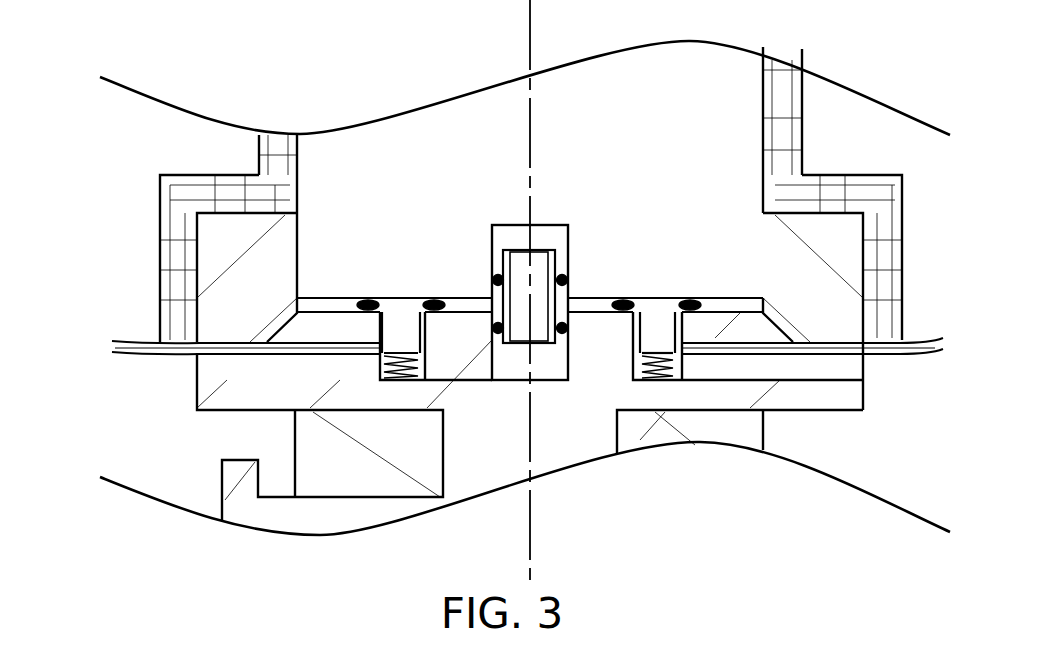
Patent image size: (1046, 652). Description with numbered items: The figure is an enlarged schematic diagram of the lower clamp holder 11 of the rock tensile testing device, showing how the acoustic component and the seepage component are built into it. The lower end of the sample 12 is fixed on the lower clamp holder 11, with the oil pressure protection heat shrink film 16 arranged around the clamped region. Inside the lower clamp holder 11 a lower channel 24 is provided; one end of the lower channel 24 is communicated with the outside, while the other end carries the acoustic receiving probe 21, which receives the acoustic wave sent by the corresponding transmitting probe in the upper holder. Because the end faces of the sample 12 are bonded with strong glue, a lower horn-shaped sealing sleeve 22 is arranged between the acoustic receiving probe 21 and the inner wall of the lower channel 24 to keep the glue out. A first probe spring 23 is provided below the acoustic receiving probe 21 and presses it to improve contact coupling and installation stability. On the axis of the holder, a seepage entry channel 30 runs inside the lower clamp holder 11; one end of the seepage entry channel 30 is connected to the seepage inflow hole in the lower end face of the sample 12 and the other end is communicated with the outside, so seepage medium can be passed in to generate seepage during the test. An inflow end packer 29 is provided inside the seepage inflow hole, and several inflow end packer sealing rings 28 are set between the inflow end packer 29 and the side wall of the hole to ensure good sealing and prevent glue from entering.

The lower clamp holder 11 is at (230, 262).
The sample 12 is at (475, 125).
The oil pressure protection heat shrink film 16 is at (183, 209).
The acoustic receiving probe 21 is at (407, 322).
The lower horn-shaped sealing sleeve 22 is at (440, 297).
The first probe spring 23 is at (417, 368).
The lower channel 24 is at (225, 367).
The inflow end packer sealing ring 28 is at (565, 326).
The inflow end packer 29 is at (538, 263).
The seepage entry channel 30 is at (547, 365).